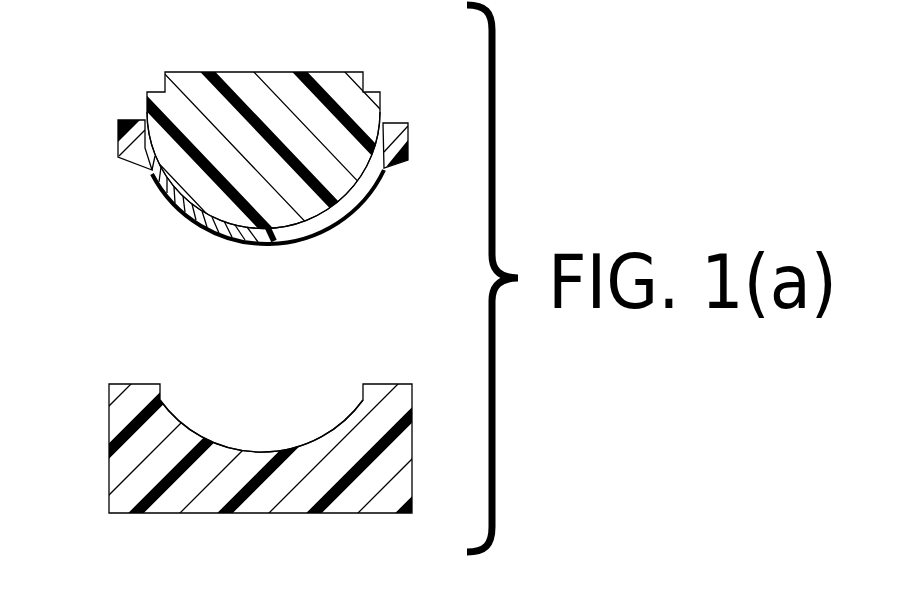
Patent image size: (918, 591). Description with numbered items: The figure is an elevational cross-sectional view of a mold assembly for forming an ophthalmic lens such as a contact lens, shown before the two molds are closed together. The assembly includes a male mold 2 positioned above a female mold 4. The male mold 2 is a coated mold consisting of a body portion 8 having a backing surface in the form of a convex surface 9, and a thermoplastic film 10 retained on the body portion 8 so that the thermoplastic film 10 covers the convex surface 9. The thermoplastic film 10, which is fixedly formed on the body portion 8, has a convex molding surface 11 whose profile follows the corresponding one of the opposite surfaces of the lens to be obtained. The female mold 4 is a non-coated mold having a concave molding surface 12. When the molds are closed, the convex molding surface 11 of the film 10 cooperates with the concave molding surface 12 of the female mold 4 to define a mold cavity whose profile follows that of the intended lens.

The male mold 2 is at (90, 92).
The female mold 4 is at (72, 448).
The body portion 8 is at (327, 88).
The convex surface 9 is at (353, 200).
The thermoplastic film 10 is at (322, 218).
The convex molding surface 11 is at (208, 232).
The concave molding surface 12 is at (263, 448).